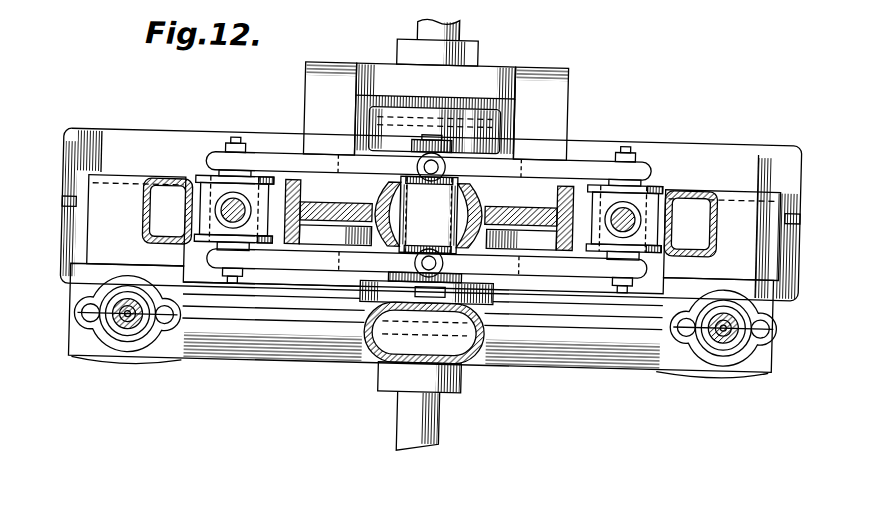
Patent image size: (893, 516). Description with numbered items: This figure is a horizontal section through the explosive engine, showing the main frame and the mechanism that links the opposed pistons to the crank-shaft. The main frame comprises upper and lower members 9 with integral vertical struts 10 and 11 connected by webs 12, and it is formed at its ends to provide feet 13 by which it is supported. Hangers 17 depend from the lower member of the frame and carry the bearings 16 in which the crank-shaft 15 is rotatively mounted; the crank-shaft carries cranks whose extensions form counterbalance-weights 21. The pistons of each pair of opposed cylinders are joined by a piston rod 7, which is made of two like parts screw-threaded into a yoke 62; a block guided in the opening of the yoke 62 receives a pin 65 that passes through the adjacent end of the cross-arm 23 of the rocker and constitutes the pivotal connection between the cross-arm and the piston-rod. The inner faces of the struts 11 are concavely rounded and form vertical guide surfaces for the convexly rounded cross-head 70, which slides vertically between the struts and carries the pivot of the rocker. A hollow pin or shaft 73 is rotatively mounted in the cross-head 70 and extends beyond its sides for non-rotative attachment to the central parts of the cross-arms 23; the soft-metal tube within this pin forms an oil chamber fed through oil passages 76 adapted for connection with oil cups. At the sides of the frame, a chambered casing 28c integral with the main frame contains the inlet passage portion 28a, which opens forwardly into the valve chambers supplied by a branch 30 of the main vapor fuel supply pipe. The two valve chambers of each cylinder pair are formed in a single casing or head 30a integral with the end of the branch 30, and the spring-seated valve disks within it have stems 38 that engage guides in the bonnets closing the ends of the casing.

The piston rod 7 is at (224, 200).
The upper and lower members of main frame 9 is at (280, 286).
The vertical strut 10 is at (297, 241).
The vertical strut 11 is at (374, 201).
The web 12 is at (340, 228).
The foot 13 is at (65, 266).
The crank-shaft 15 is at (427, 447).
The bearing 16 is at (394, 52).
The hanger 17 is at (327, 112).
The counterbalance-weight 21 is at (400, 140).
The cross-arm 23 is at (288, 156).
The inlet passage portion 28a is at (174, 203).
The chambered casing 28c is at (130, 212).
The branch of supply pipe 30 is at (230, 300).
The casing or head 30a is at (149, 368).
The valve stem 38 is at (123, 333).
The yoke 62 is at (204, 199).
The pin 65 is at (243, 288).
The cross-head 70 is at (442, 224).
The hollow pin or shaft 73 is at (449, 300).
The oil passage 76 is at (445, 168).